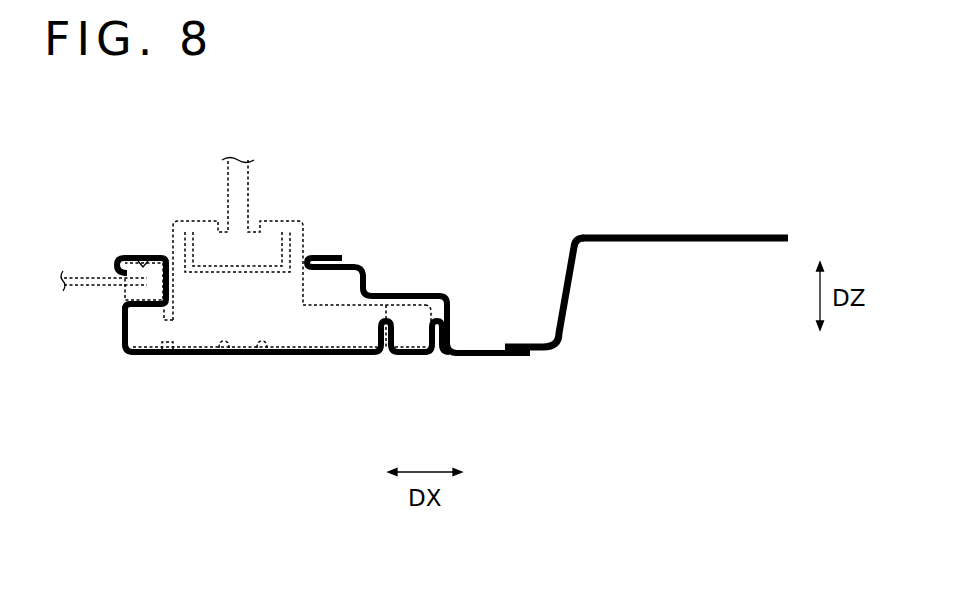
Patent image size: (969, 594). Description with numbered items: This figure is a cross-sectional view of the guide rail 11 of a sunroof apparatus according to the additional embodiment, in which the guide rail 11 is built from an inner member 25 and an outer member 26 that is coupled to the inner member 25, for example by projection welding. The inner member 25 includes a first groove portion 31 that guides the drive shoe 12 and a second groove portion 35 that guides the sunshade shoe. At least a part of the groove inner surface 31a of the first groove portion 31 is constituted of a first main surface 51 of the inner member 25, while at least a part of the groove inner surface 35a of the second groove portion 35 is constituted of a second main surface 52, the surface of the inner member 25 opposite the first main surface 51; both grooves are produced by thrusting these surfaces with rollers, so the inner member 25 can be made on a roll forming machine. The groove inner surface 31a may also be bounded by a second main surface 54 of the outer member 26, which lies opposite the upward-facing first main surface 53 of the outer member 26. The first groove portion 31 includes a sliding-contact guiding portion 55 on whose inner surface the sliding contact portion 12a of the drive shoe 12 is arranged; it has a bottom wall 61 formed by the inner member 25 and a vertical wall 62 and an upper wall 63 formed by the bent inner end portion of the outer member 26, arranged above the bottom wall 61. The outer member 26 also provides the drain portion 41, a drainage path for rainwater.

The guide rail 11 is at (629, 164).
The drive shoe 12 is at (297, 216).
The sliding contact portion 12a is at (142, 360).
The inner member 25 is at (105, 370).
The outer member 26 is at (487, 198).
The first groove portion 31 is at (221, 357).
The groove inner surface 31a is at (260, 357).
The second groove portion 35 is at (117, 264).
The groove inner surface 35a is at (143, 257).
The drain portion 41 is at (568, 262).
The first main surface 51 is at (289, 346).
The second main surface 52 is at (121, 327).
The first main surface 53 is at (489, 344).
The second main surface 54 is at (380, 303).
The sliding-contact guiding portion 55 is at (404, 282).
The bottom wall 61 is at (419, 360).
The vertical wall 62 is at (453, 314).
The upper wall 63 is at (424, 294).